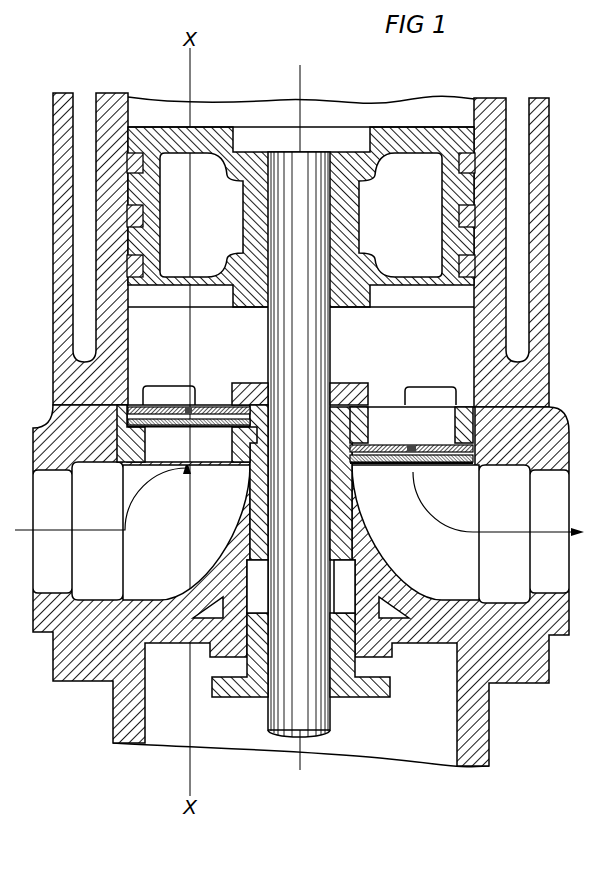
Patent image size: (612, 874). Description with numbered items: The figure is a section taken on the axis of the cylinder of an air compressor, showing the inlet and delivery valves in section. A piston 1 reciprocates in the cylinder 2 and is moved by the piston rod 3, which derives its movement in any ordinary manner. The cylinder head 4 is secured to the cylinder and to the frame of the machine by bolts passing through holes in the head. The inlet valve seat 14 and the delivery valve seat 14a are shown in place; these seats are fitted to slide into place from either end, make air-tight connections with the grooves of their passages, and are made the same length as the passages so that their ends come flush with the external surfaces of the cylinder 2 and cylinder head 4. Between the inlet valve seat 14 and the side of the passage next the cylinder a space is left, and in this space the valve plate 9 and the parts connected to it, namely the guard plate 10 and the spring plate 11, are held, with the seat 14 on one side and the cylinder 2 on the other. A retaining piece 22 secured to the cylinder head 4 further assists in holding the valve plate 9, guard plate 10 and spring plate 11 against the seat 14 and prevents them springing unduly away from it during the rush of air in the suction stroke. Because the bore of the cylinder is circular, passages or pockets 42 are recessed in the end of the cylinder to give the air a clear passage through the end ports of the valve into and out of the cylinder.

The piston 1 is at (389, 140).
The cylinder 2 is at (110, 103).
The piston rod 3 is at (290, 716).
The cylinder head 4 is at (43, 428).
The valve plate 9 is at (229, 410).
The guard plate 10 is at (218, 421).
The spring plate 11 is at (206, 427).
The inlet valve seat 14 is at (140, 463).
The delivery valve seat 14a is at (371, 410).
The retaining piece 22 is at (258, 383).
The recessed passages or pockets 42 is at (167, 386).